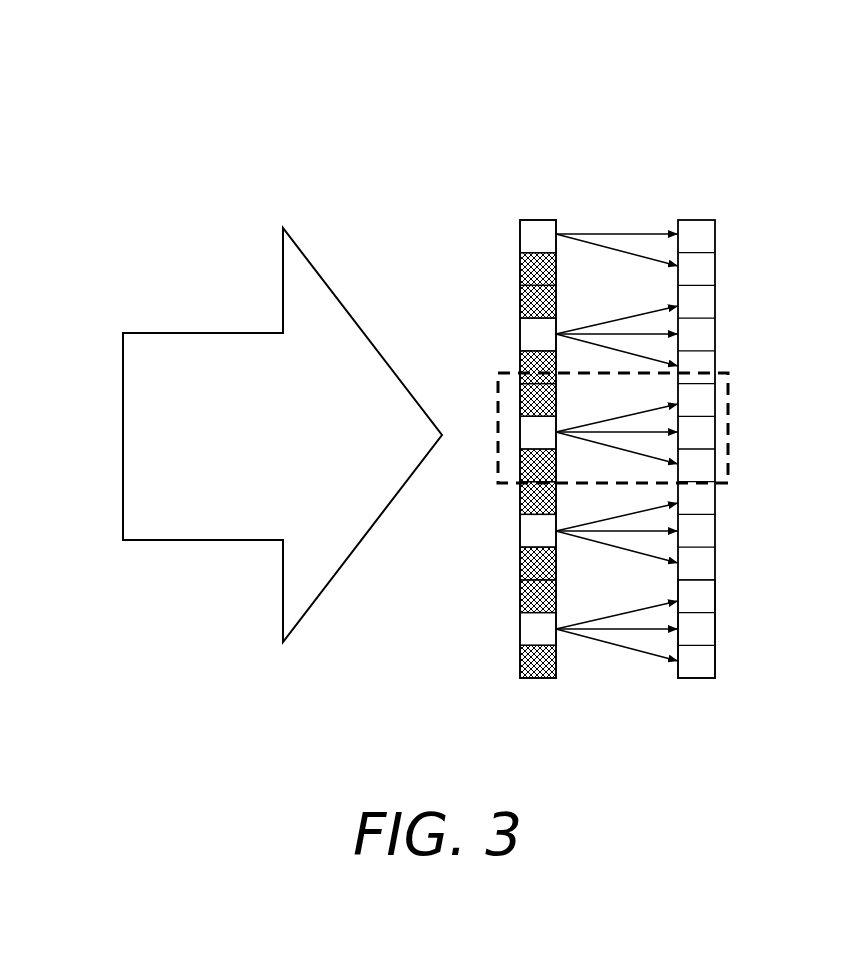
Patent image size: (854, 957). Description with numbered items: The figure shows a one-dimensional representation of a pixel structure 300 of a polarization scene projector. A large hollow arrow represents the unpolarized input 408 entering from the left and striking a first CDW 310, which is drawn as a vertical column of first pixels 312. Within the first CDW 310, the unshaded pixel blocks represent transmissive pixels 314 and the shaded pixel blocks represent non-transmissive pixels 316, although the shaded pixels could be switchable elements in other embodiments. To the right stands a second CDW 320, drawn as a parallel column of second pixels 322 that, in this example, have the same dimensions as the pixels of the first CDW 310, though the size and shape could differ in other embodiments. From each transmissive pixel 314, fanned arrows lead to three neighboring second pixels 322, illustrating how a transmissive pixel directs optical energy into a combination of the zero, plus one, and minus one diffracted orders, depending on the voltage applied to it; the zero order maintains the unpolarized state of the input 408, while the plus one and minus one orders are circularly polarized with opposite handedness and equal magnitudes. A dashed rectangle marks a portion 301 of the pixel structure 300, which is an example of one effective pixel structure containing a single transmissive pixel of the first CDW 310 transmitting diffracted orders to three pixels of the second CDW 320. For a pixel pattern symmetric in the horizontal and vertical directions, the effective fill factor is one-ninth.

The pixel structure 300 is at (567, 158).
The portion 301 is at (728, 378).
The first CDW 310 is at (488, 492).
The first pixels 312 is at (498, 215).
The transmissive pixels 314 is at (535, 525).
The non-transmissive pixels 316 is at (522, 597).
The second CDW 320 is at (719, 495).
The second pixels 322 is at (729, 575).
The input 408 is at (200, 542).